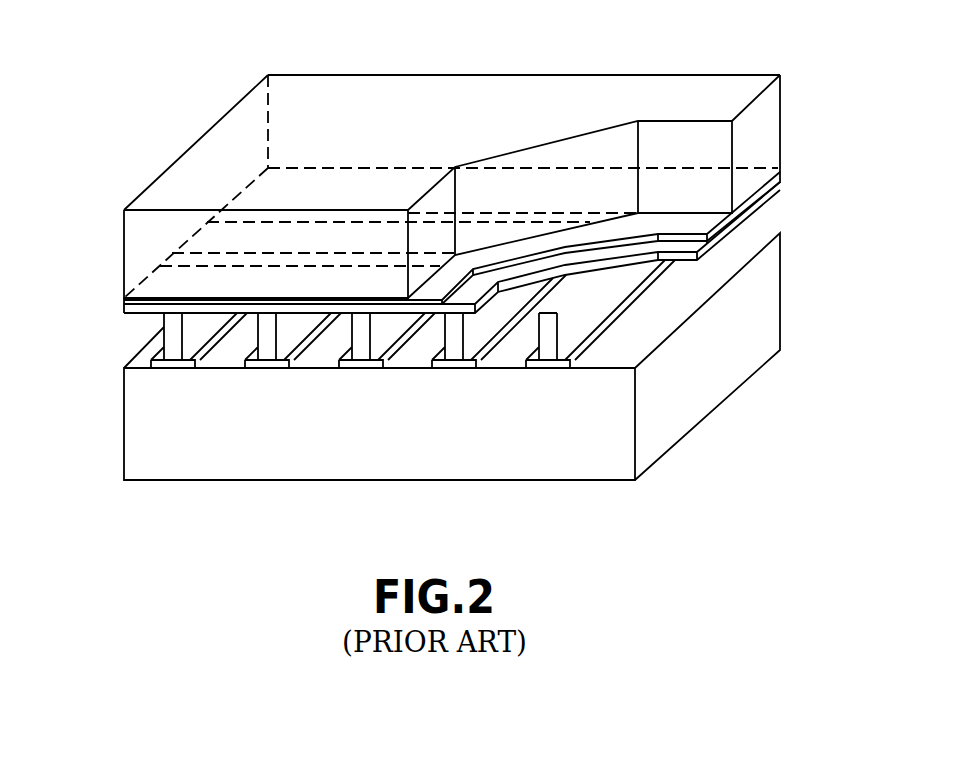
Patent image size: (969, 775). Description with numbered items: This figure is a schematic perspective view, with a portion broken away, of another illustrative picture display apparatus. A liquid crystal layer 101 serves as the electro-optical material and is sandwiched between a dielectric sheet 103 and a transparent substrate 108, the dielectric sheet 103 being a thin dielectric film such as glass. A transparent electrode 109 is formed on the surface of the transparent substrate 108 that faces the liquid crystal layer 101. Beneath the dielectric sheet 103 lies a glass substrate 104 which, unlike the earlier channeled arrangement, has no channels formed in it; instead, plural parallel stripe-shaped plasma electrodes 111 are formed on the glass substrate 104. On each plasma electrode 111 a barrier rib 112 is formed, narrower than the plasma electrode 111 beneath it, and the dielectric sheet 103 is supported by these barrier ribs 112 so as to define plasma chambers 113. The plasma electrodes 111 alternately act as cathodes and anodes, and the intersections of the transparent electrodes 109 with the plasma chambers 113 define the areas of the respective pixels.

The liquid crystal layer 101 is at (703, 223).
The dielectric sheet 103 is at (690, 245).
The glass substrate 104 is at (670, 405).
The transparent substrate 108 is at (773, 107).
The transparent electrode 109 is at (190, 237).
The plasma electrode 111 is at (485, 353).
The barrier rib 112 is at (570, 323).
The plasma chamber 113 is at (316, 352).